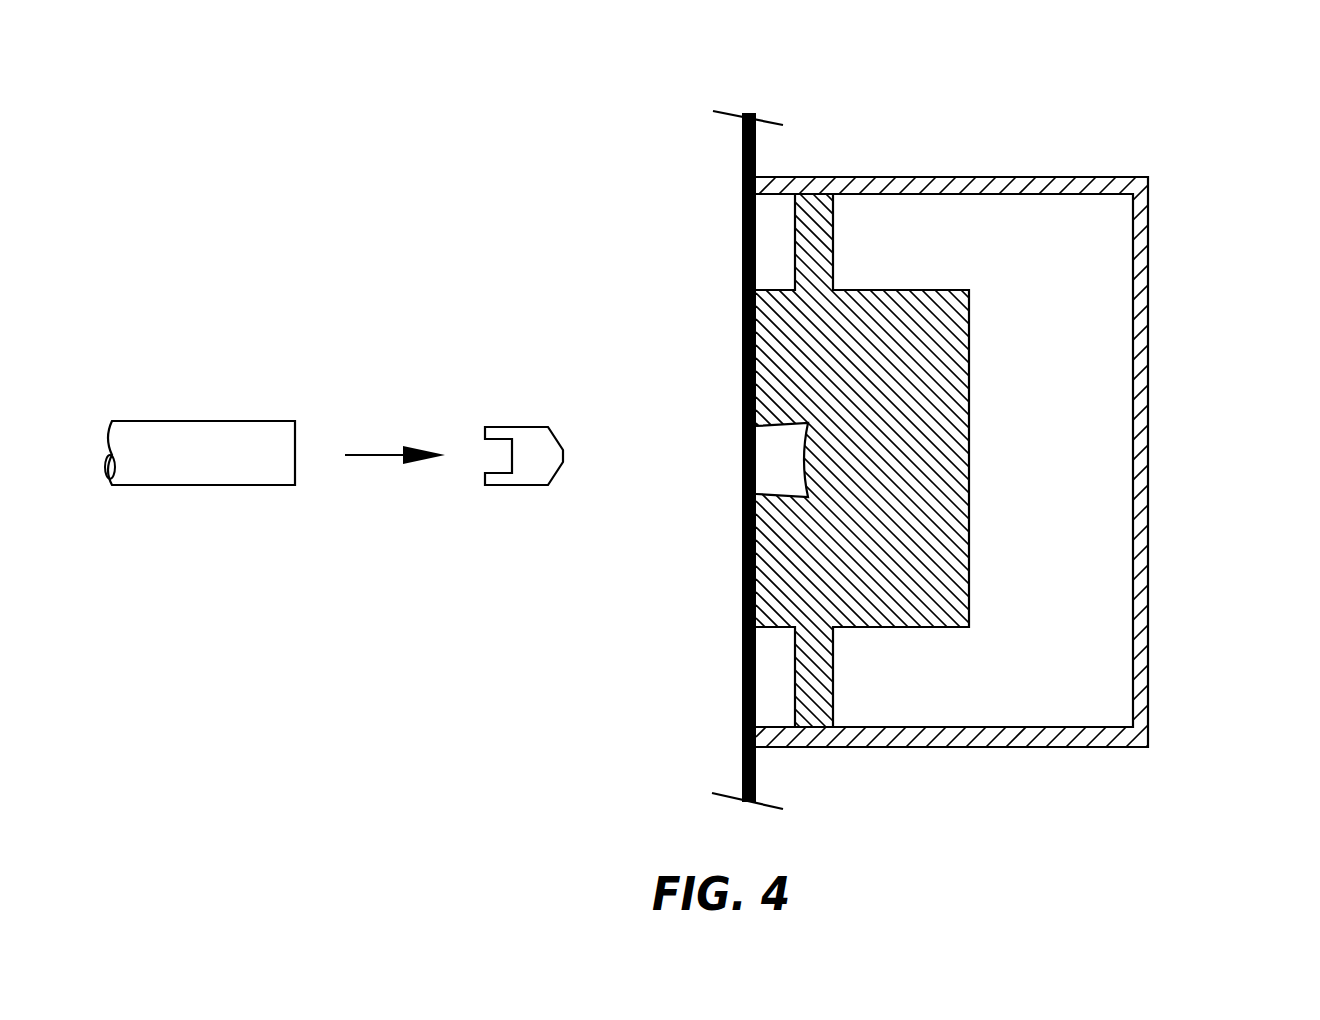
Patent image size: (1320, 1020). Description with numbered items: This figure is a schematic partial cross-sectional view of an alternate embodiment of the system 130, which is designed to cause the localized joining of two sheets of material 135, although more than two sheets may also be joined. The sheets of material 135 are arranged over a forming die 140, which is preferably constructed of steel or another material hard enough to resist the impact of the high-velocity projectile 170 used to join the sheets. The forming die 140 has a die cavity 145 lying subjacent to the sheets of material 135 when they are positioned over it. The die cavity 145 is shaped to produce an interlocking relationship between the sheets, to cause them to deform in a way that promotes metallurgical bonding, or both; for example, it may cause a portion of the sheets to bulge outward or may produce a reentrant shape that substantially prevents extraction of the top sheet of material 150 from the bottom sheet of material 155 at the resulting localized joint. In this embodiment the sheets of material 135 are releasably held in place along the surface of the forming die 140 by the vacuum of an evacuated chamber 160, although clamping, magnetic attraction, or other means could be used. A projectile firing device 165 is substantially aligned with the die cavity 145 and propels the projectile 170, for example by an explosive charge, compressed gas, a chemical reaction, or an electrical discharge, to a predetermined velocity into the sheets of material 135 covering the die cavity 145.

The system 130 is at (322, 151).
The sheets of material 135 is at (724, 640).
The forming die 140 is at (778, 535).
The die cavity 145 is at (766, 458).
The top sheet of material 150 is at (743, 203).
The bottom sheet of material 155 is at (743, 148).
The evacuated chamber 160 is at (1094, 348).
The projectile firing device 165 is at (252, 467).
The projectile 170 is at (537, 438).